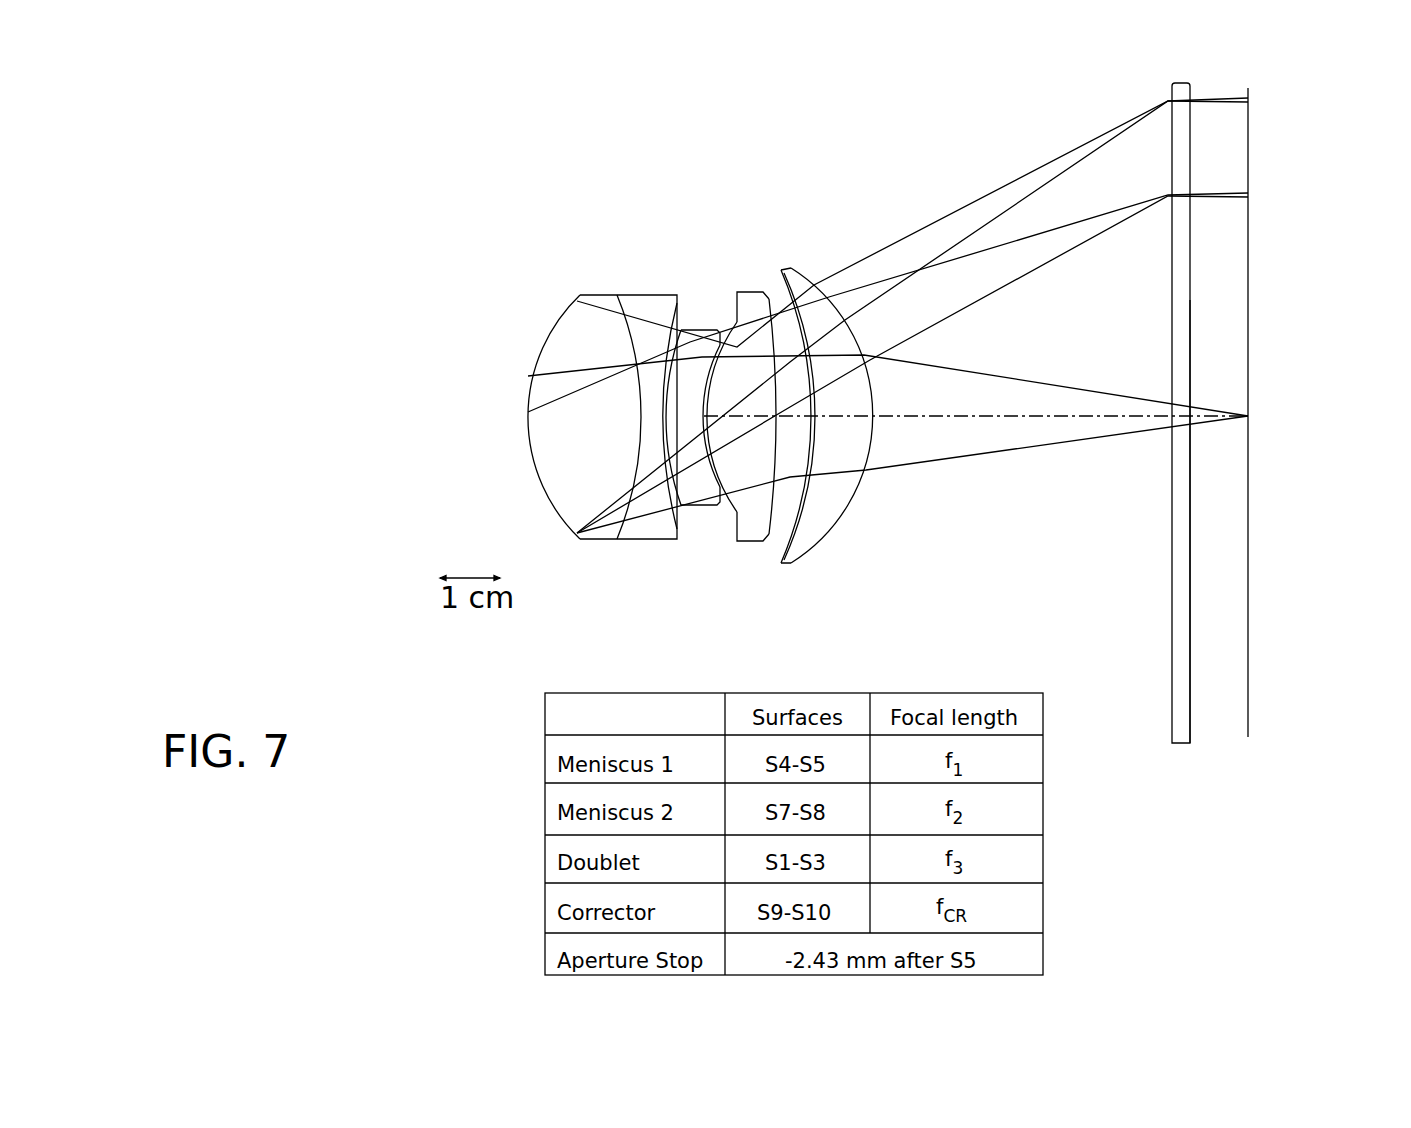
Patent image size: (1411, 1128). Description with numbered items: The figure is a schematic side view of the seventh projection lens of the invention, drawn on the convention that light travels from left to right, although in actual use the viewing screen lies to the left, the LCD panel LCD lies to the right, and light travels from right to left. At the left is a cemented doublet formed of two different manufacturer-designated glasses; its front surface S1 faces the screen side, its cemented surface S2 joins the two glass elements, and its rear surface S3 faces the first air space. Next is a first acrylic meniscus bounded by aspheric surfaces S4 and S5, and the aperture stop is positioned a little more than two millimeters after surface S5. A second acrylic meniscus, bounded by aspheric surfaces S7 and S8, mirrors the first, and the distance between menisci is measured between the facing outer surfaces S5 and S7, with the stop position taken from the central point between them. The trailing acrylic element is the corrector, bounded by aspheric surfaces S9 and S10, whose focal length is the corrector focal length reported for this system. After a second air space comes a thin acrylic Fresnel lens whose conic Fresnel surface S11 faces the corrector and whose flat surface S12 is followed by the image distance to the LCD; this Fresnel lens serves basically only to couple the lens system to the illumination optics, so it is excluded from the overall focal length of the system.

The first surface of doublet S1 is at (543, 345).
The cemented surface of doublet S2 is at (620, 331).
The rear surface of doublet S3 is at (668, 346).
The front surface of first meniscus S4 is at (688, 330).
The rear surface of first meniscus S5 is at (703, 470).
The front surface of second meniscus S7 is at (757, 516).
The rear surface of second meniscus S8 is at (768, 536).
The front surface of corrector S9 is at (797, 527).
The rear surface of corrector S10 is at (852, 522).
The Fresnel surface of Fresnel lens S11 is at (1172, 663).
The plano surface of Fresnel lens S12 is at (1192, 712).
The LCD panel LCD is at (1248, 663).